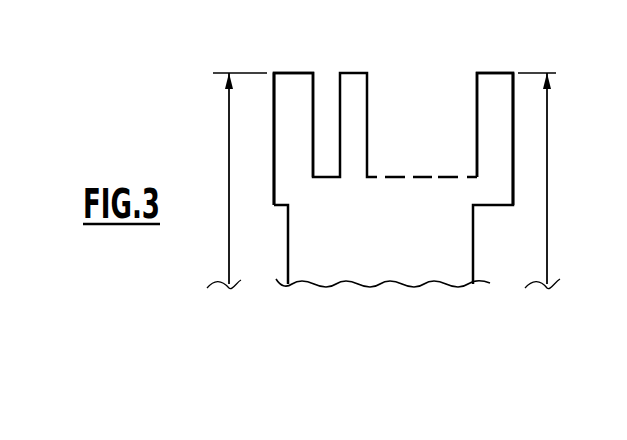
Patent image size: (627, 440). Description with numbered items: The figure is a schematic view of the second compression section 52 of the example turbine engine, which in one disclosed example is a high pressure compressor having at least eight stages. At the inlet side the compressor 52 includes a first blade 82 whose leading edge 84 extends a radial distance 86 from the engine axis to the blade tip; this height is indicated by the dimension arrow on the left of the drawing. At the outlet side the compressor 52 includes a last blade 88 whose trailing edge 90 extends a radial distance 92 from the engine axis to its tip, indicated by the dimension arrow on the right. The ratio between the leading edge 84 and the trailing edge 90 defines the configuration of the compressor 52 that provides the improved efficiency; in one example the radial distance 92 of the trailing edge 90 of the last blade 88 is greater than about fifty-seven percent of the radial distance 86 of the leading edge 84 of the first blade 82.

The second compression section 52 is at (536, 54).
The first blade 82 is at (299, 91).
The leading edge 84 is at (262, 188).
The radial distance 86 is at (228, 152).
The last blade 88 is at (485, 110).
The trailing edge 90 is at (526, 150).
The radial distance 92 is at (548, 193).